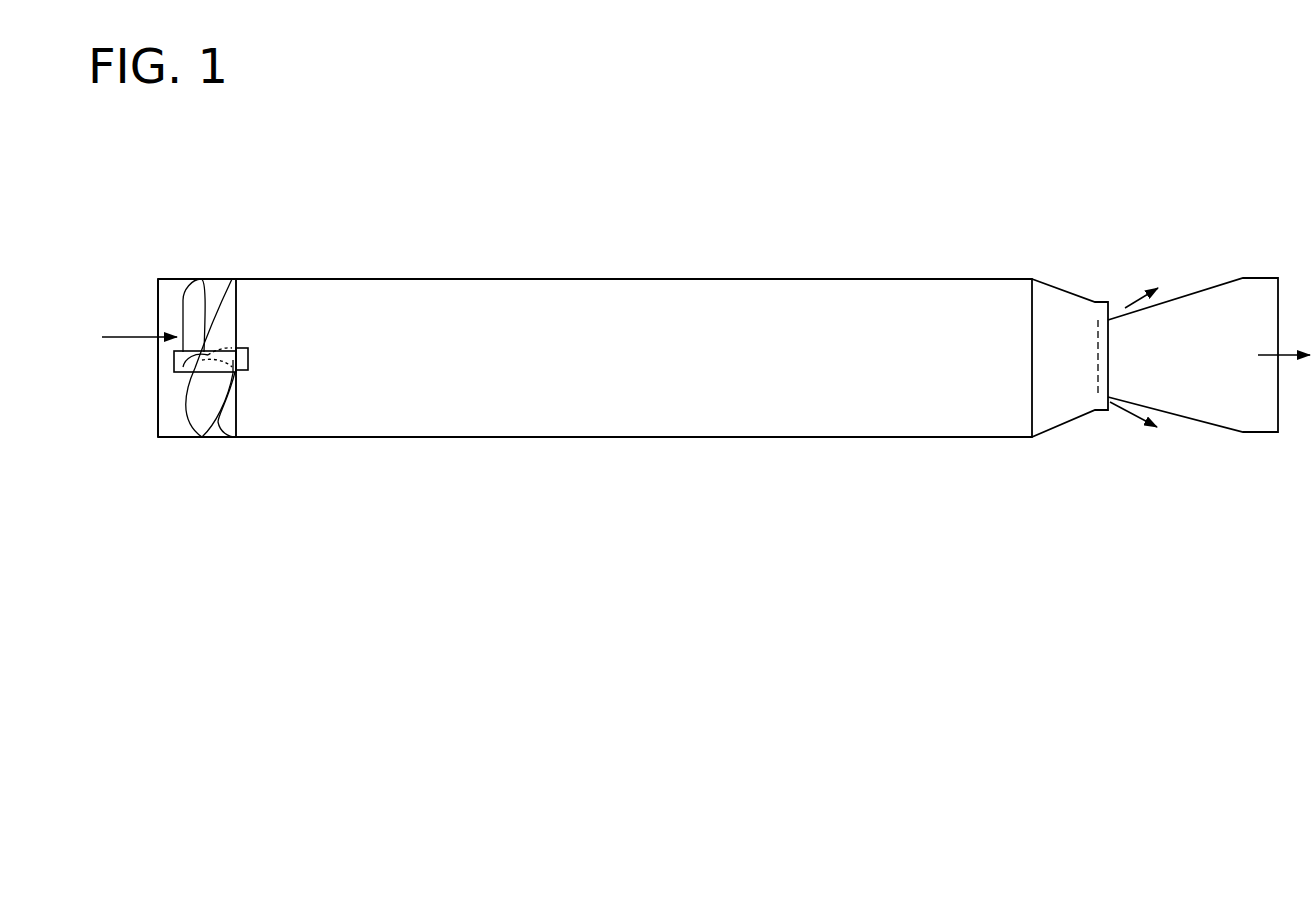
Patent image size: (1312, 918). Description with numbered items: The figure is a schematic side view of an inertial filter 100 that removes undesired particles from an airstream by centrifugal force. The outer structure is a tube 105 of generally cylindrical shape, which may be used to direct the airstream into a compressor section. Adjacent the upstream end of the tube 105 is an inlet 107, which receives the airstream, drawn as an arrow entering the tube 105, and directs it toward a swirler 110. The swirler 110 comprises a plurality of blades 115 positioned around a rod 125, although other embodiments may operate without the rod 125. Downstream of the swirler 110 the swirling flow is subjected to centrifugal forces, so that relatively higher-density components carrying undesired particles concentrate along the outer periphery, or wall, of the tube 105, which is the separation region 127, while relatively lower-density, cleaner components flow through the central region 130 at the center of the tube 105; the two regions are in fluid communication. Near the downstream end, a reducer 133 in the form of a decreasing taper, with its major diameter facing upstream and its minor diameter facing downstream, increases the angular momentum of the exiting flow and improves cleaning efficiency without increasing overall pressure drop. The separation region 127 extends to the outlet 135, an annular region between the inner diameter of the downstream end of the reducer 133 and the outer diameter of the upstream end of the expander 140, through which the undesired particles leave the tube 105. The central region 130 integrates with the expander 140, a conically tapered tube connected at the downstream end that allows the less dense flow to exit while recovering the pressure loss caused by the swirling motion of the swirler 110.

The inertial filter 100 is at (320, 227).
The tube 105 is at (425, 433).
The inlet 107 is at (148, 303).
The swirler 110 is at (167, 402).
The blades 115 is at (233, 438).
The rod 125 is at (172, 355).
The separation region 127 is at (533, 293).
The central region 130 is at (565, 379).
The reducer 133 is at (1052, 437).
The outlet 135 is at (1125, 295).
The expander 140 is at (1212, 428).